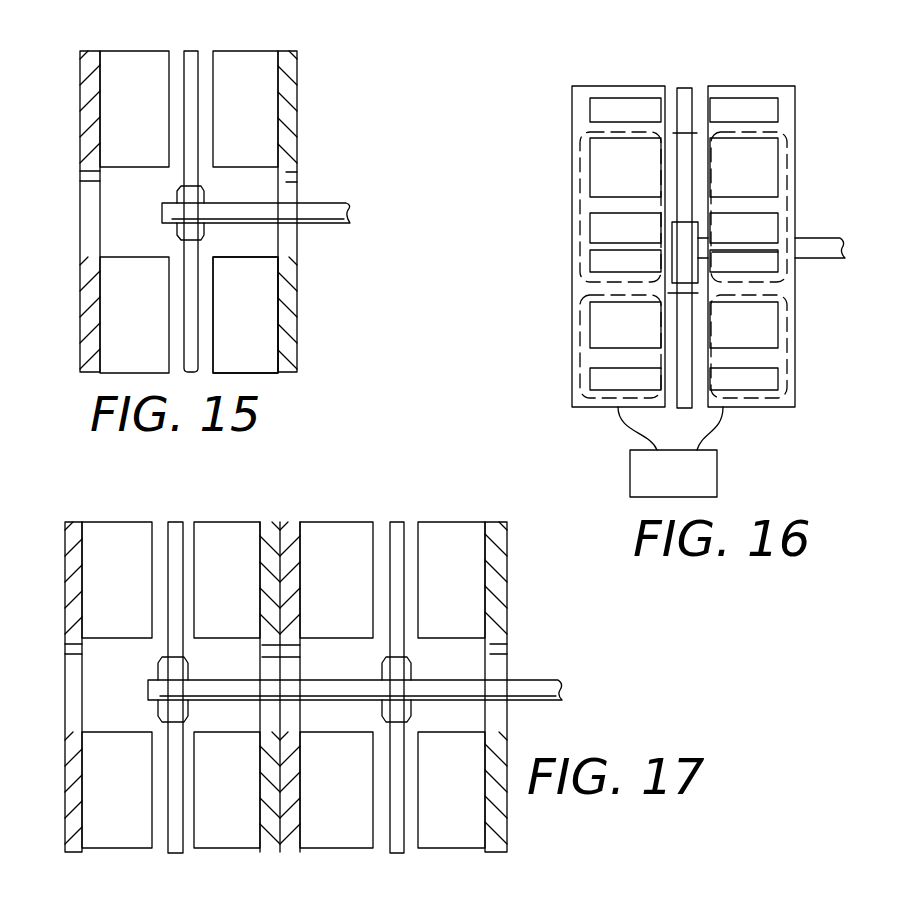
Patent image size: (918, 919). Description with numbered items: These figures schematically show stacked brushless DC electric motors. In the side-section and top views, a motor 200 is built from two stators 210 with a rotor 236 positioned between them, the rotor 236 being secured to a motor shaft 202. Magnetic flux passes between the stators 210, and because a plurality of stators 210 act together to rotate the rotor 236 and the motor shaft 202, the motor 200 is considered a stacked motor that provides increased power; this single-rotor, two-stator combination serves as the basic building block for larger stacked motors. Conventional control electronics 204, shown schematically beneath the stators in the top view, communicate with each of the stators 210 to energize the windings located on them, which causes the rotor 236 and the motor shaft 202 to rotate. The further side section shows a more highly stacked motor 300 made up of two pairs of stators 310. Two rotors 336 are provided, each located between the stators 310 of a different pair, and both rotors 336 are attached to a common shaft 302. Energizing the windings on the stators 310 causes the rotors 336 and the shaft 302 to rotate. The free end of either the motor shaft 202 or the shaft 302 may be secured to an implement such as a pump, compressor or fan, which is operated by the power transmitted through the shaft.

In FIG. 15, the brushless DC electric motor 200 is at (66, 98).
In FIG. 16, the brushless DC electric motor 200 is at (546, 176).
In FIG. 15, the motor shaft 202 is at (320, 203).
In FIG. 16, the control electronics 204 is at (717, 465).
In FIG. 15, the stator 210 is at (158, 372).
In FIG. 15, the rotor 236 is at (192, 58).
In FIG. 17, the stacked motor 300 is at (526, 590).
In FIG. 17, the shaft 302 is at (556, 680).
In FIG. 17, the stator 310 is at (122, 522).
In FIG. 17, the rotor 336 is at (173, 855).